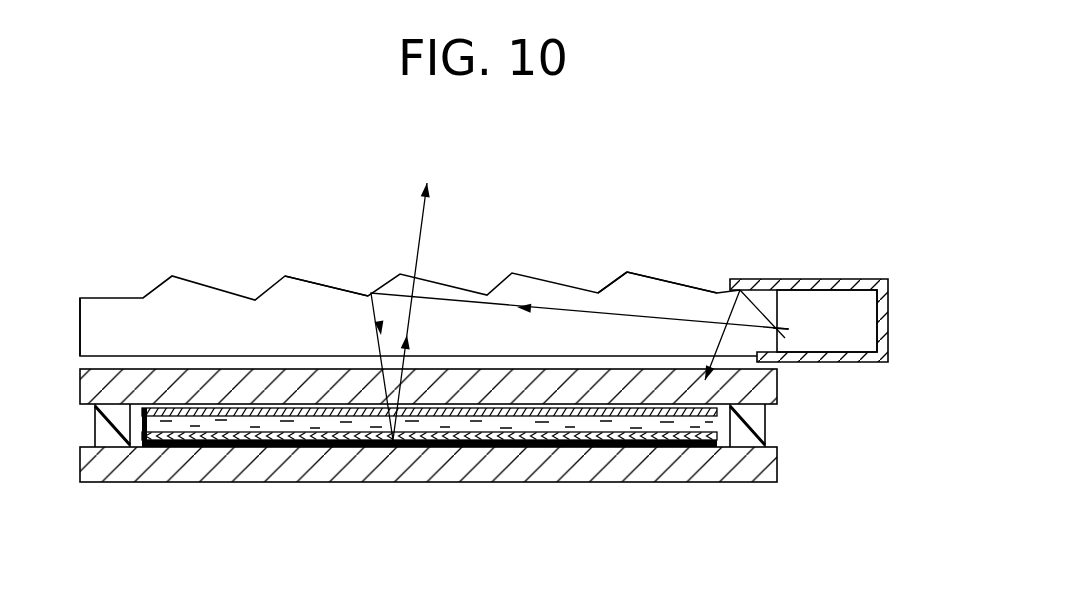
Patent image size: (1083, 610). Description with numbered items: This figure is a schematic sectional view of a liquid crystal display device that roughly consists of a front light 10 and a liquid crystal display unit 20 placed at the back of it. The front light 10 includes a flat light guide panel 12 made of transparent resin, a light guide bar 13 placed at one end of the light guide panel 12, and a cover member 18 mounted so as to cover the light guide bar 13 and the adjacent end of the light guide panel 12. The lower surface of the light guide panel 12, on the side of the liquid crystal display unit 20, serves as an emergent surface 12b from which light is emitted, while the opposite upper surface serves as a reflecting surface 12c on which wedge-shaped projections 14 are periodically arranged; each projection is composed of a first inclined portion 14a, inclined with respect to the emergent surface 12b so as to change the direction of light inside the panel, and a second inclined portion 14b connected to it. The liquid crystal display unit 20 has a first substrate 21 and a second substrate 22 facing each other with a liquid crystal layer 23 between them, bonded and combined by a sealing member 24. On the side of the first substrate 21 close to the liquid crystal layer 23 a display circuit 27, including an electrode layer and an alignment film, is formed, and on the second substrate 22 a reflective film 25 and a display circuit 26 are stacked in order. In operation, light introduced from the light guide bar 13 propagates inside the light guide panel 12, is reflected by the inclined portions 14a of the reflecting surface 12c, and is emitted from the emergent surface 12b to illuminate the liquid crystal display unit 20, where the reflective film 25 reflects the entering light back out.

The front light 10 is at (268, 285).
The light guide panel 12 is at (718, 293).
The emergent surface 12b is at (112, 350).
The reflecting surface 12c is at (328, 285).
The projections 14 is at (710, 192).
The first inclined portion 14a is at (610, 278).
The second inclined portion 14b is at (680, 285).
The cover member 18 is at (820, 285).
The light guide bar 13 is at (858, 300).
The liquid crystal display unit 20 is at (640, 492).
The first substrate 21 is at (767, 382).
The second substrate 22 is at (778, 455).
The liquid crystal layer 23 is at (718, 413).
The sealing member 24 is at (748, 432).
The reflective film 25 is at (348, 445).
The display circuit 26 is at (275, 440).
The display circuit 27 is at (222, 418).